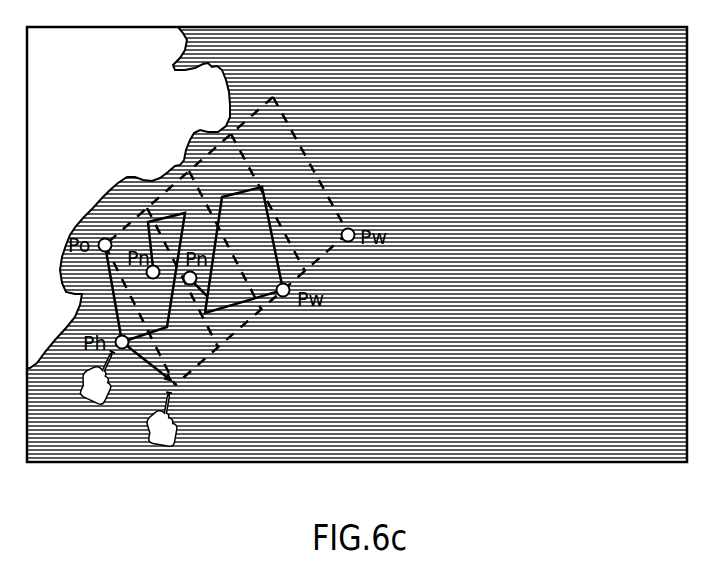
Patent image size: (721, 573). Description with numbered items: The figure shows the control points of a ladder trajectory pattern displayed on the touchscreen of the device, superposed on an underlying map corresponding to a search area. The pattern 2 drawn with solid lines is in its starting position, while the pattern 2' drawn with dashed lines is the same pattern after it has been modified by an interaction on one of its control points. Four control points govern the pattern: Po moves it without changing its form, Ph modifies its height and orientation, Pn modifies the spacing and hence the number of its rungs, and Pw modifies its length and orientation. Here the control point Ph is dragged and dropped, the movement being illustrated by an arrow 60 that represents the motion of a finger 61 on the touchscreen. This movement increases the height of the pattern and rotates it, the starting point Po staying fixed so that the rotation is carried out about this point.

The trajectory pattern 2 is at (194, 288).
The modified pattern 2' is at (226, 241).
The arrow 60 is at (125, 350).
The finger 61 is at (101, 396).